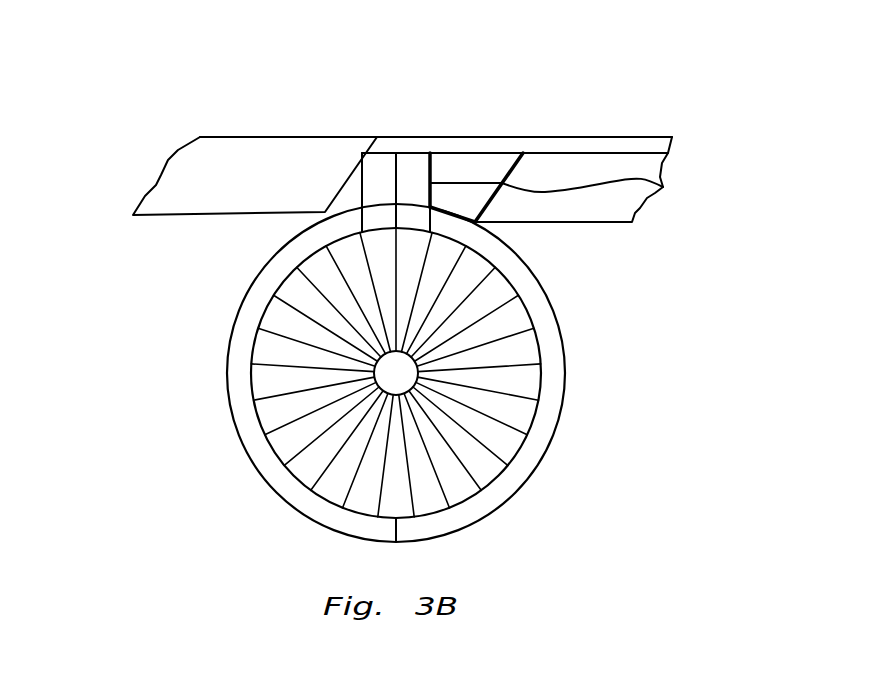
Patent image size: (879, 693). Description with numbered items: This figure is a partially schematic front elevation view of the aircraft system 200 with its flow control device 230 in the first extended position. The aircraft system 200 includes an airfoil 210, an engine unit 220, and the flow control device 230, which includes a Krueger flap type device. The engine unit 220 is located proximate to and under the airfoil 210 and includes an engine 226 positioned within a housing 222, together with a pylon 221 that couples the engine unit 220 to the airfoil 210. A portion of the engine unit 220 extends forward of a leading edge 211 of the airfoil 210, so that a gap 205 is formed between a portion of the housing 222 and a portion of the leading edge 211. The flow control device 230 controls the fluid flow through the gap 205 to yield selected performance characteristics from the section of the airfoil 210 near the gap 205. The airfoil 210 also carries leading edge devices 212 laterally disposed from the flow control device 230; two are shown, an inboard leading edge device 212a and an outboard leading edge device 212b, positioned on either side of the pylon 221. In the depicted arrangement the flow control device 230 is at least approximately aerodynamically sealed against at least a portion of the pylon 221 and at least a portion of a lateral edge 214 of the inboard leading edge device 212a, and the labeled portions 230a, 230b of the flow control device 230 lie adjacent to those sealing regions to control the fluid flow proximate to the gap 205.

The aircraft system 200 is at (195, 53).
The gap 205 is at (467, 225).
The airfoil 210 is at (635, 136).
The leading edge 211 is at (477, 148).
The leading edge device 212 is at (530, 110).
The inboard leading edge device 212a is at (545, 168).
The outboard leading edge device 212b is at (273, 150).
The lateral edge 214 is at (663, 187).
The engine unit 220 is at (585, 483).
The pylon 221 is at (410, 170).
The housing 222 is at (228, 347).
The engine 226 is at (520, 378).
The flow control device 230 is at (447, 218).
The first notch wall 230a is at (457, 170).
The second notch wall 230b is at (472, 198).